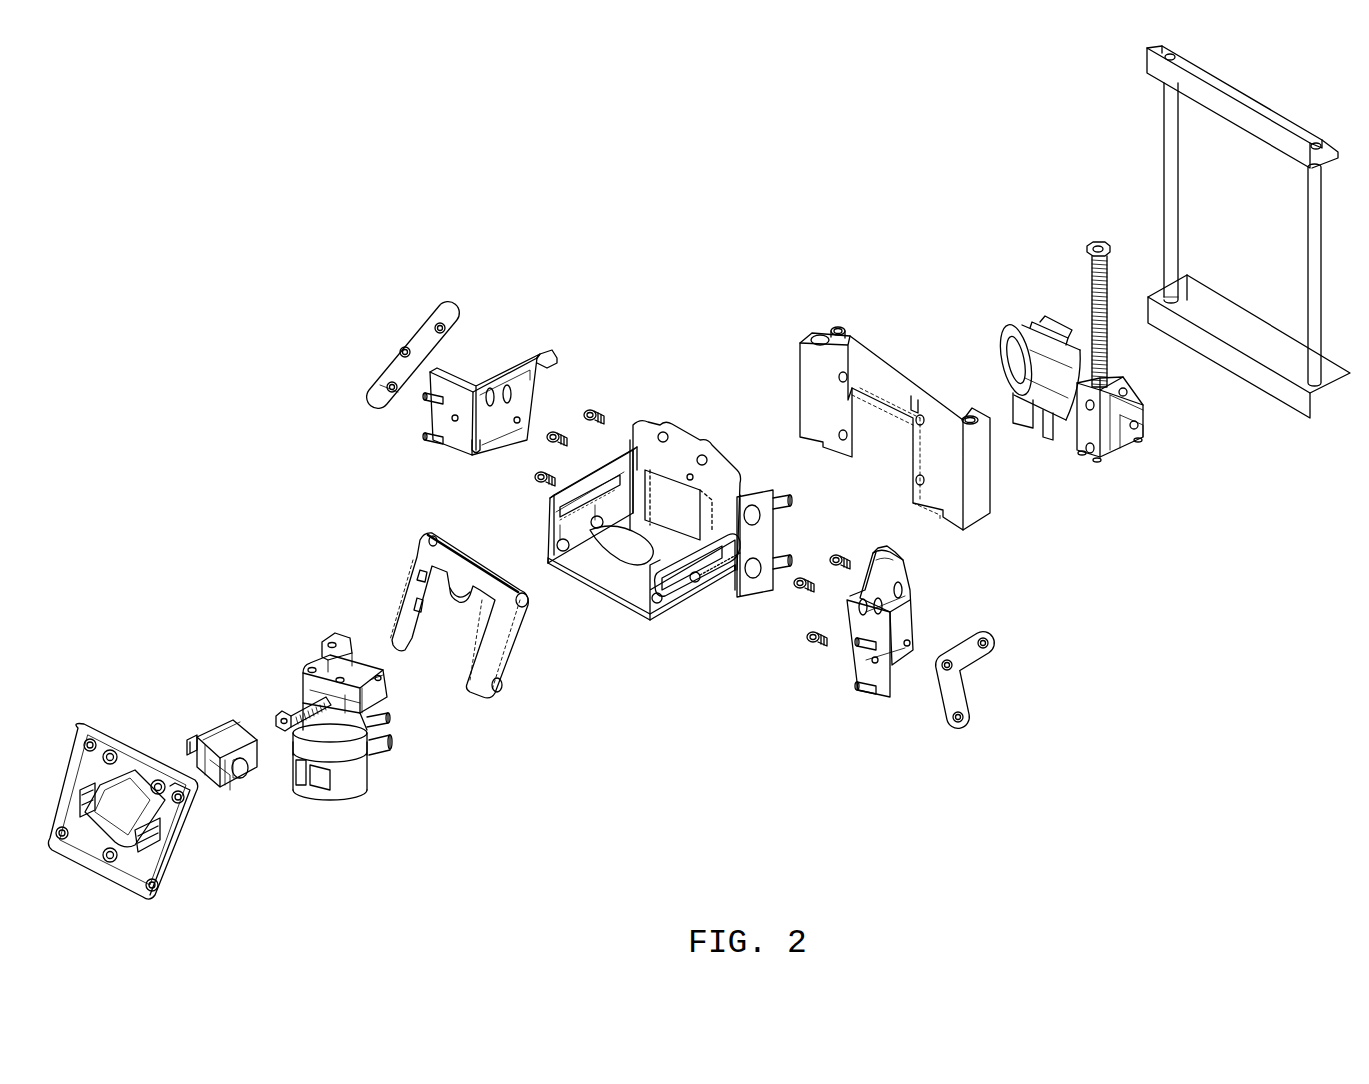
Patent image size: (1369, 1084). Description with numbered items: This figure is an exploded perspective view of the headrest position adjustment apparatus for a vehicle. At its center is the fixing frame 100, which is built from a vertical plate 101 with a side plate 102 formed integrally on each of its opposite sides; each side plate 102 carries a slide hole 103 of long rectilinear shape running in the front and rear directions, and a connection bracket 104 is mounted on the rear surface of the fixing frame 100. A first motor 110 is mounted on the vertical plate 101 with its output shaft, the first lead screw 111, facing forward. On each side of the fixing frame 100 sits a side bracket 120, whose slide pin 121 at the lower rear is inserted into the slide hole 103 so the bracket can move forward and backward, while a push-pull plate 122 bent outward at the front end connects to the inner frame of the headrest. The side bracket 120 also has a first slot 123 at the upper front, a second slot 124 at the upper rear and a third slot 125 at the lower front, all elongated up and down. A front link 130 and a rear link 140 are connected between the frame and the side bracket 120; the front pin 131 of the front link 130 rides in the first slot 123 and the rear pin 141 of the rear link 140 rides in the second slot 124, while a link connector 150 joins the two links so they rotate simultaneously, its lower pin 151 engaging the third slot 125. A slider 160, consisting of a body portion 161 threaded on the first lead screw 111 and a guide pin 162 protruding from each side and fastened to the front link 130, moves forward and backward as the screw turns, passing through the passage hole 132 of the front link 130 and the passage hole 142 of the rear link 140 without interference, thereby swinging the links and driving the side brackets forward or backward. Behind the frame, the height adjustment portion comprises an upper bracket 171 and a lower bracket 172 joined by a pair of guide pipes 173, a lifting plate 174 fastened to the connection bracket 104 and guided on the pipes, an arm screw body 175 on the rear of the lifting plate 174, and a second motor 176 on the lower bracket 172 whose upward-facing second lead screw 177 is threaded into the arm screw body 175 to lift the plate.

The fixing frame 100 is at (636, 523).
The vertical plate 101 is at (628, 595).
The side plate 102 is at (548, 528).
The slide hole 103 is at (575, 500).
The connection bracket 104 is at (745, 495).
The first motor 110 is at (352, 742).
The first lead screw 111 is at (288, 705).
The side bracket 120 is at (440, 450).
The slide pin 121 is at (617, 455).
The push-pull plate 122 is at (428, 410).
The first slot 123 is at (535, 362).
The second slot 124 is at (488, 393).
The third slot 125 is at (477, 445).
The front link 130 is at (147, 815).
The front pin 131 is at (557, 436).
The passage hole 132 is at (130, 790).
The rear link 140 is at (459, 653).
The rear pin 141 is at (595, 412).
The passage hole 142 is at (460, 600).
The link connector 150 is at (420, 335).
The lower pin 151 is at (545, 485).
The slider 160 is at (240, 772).
The body portion 161 is at (252, 765).
The guide pin 162 is at (240, 778).
The upper bracket 171 is at (1147, 63).
The lower bracket 172 is at (1162, 298).
The guide pipes 173 is at (1313, 270).
The lifting plate 174 is at (882, 382).
The arm screw body 175 is at (918, 400).
The second motor 176 is at (1062, 400).
The second lead screw 177 is at (1105, 360).